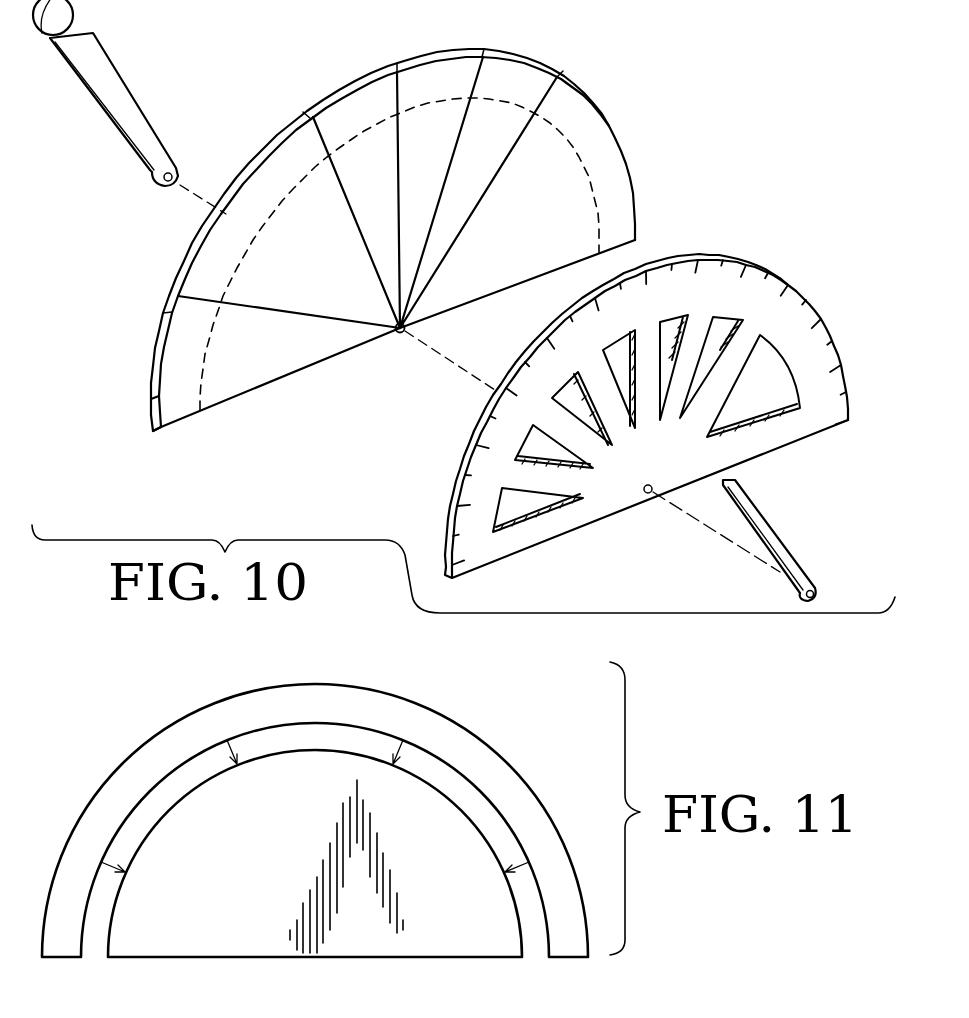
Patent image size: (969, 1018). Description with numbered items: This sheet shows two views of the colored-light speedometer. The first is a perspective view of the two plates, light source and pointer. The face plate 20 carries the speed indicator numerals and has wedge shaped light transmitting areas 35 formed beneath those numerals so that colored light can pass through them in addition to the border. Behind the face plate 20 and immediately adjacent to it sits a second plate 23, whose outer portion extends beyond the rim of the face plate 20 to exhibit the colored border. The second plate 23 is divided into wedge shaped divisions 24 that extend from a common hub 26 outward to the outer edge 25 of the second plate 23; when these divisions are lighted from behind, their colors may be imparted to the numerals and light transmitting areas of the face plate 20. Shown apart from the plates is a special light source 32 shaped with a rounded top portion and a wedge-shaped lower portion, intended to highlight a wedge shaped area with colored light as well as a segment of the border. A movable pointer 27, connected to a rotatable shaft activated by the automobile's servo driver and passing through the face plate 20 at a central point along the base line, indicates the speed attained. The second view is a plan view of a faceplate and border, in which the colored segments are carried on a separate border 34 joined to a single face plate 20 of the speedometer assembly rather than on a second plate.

In FIG. 10, the face plate 20 is at (646, 378).
In FIG. 11, the face plate 20 is at (210, 937).
In FIG. 10, the second plate 23 is at (619, 84).
In FIG. 10, the wedge shaped divisions 24 is at (612, 167).
In FIG. 10, the outer edge 25 is at (153, 381).
In FIG. 10, the common hub 26 is at (400, 334).
In FIG. 10, the pointer 27 is at (772, 530).
In FIG. 10, the special light source 32 is at (157, 74).
In FIG. 11, the separate border 34 is at (458, 737).
In FIG. 10, the wedge shaped light transmitting areas 35 is at (547, 515).